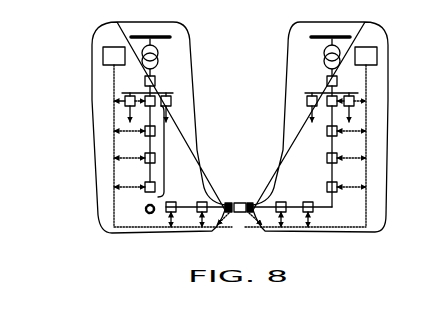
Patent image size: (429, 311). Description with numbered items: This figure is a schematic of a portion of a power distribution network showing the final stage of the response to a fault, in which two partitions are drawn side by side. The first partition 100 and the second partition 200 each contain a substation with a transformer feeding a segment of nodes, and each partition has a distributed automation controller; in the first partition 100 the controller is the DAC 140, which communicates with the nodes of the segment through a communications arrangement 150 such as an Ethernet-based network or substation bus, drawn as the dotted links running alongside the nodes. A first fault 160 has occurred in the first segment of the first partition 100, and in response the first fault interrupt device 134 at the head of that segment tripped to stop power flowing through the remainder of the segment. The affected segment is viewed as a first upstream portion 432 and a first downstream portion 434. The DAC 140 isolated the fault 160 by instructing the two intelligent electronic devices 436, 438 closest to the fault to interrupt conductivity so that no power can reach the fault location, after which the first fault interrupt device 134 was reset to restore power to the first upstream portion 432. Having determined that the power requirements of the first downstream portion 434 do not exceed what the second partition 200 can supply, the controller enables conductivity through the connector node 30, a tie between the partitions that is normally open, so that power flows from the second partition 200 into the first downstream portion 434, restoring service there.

The first partition 100 is at (121, 27).
The second partition 200 is at (361, 27).
The distributed automation controller 140 is at (103, 53).
The communications arrangement 150 is at (140, 117).
The first fault interrupt device 134 is at (166, 96).
The first upstream portion 432 is at (165, 152).
The first downstream portion 434 is at (165, 207).
The intelligent electronic device 436 is at (118, 188).
The intelligent electronic device 438 is at (169, 211).
The first fault 160 is at (147, 212).
The connector node 30 is at (243, 203).